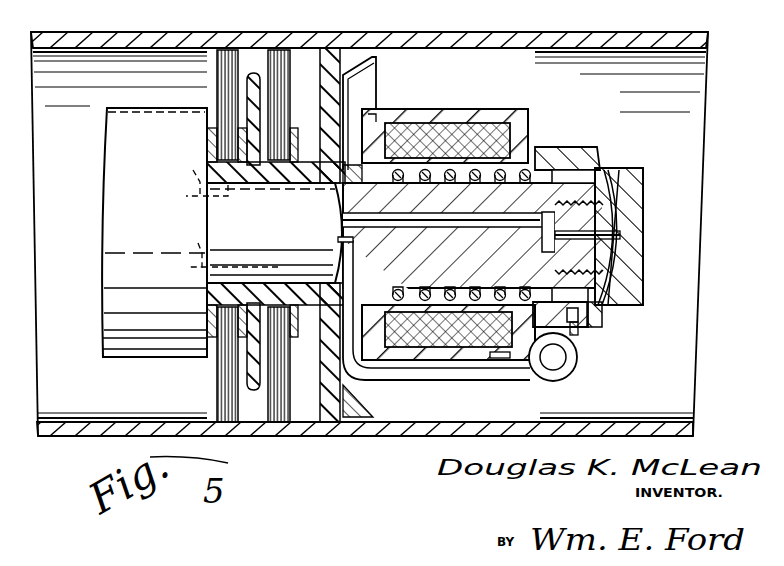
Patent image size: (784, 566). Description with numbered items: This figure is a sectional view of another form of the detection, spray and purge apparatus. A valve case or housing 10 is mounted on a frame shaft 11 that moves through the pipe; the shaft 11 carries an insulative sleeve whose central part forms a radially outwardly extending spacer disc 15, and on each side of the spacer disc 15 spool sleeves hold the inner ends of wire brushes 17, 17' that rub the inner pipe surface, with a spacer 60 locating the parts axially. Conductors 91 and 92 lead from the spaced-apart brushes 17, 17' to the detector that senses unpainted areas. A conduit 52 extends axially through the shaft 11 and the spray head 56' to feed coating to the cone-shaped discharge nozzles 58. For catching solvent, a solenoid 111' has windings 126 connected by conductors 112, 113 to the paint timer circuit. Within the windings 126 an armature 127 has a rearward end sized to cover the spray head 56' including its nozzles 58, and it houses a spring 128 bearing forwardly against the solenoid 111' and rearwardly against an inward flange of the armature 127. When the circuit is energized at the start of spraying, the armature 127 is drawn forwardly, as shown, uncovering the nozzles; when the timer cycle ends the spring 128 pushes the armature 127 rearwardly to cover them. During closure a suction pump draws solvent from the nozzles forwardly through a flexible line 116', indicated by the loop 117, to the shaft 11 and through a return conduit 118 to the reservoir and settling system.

The valve case or housing 10 is at (146, 222).
The frame shaft 11 is at (249, 222).
The spacer disc 15 is at (257, 101).
The wire bristles or brushes 17 is at (209, 364).
The wire bristles or brushes 17' is at (284, 362).
The conduit 52 is at (337, 216).
The spray head 56' is at (636, 230).
The discharge nozzles or orifices 58 is at (620, 203).
The spacer 60 is at (310, 165).
The conductor 91 is at (200, 176).
The conductor 92 is at (230, 246).
The solenoid 111' is at (448, 214).
The conductor 112 is at (378, 118).
The conductor 113 is at (503, 357).
The flexible line 116' is at (388, 400).
The loop 117 is at (578, 370).
The return conduit 118 is at (333, 237).
The windings 126 is at (438, 128).
The armature 127 is at (580, 148).
The spring 128 is at (546, 178).